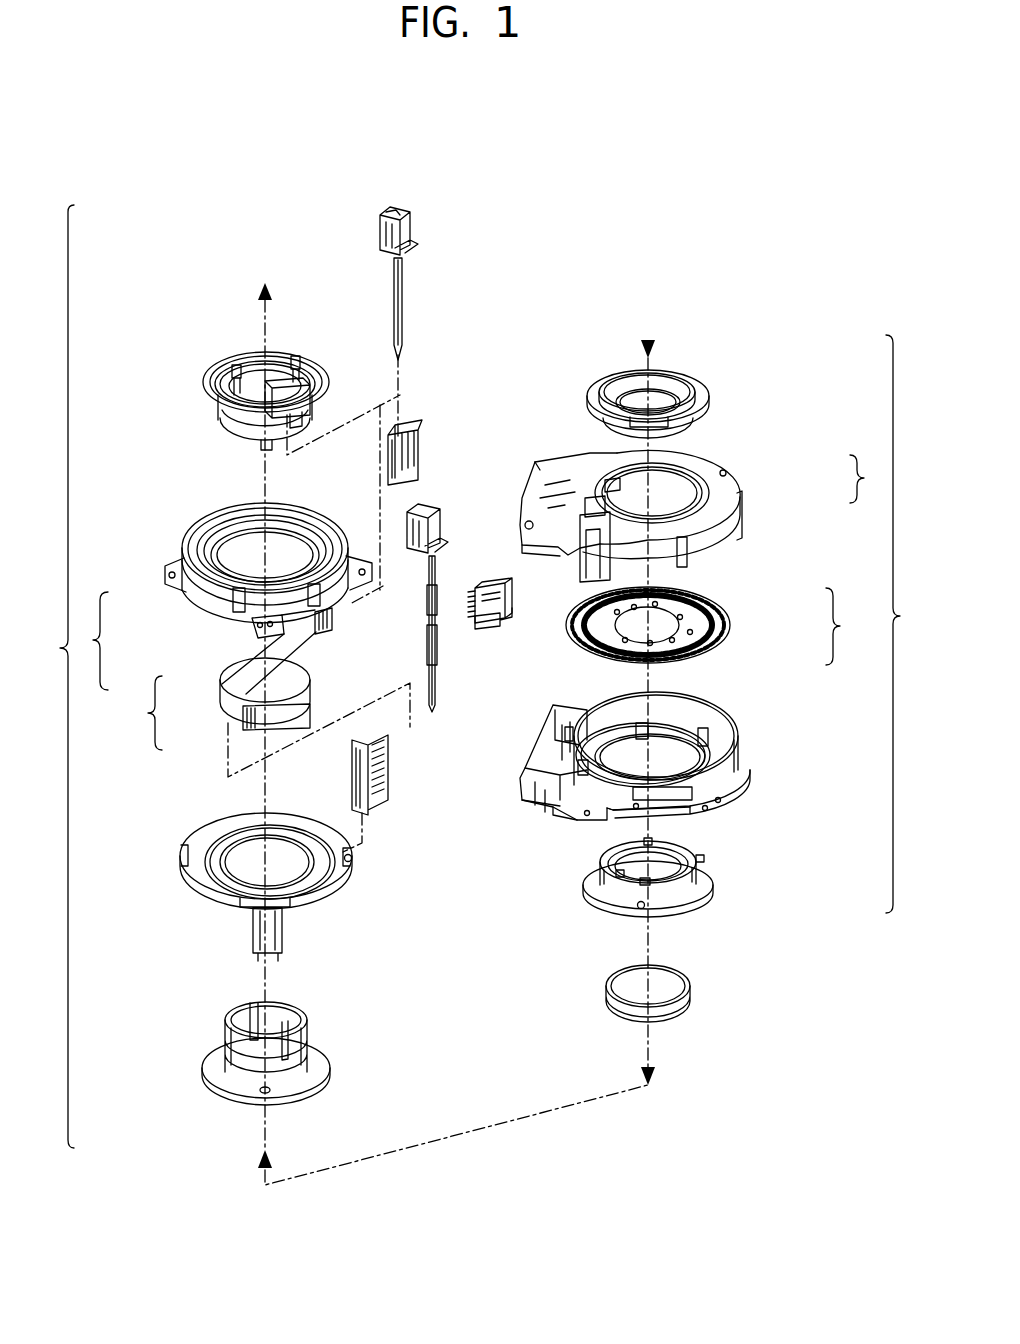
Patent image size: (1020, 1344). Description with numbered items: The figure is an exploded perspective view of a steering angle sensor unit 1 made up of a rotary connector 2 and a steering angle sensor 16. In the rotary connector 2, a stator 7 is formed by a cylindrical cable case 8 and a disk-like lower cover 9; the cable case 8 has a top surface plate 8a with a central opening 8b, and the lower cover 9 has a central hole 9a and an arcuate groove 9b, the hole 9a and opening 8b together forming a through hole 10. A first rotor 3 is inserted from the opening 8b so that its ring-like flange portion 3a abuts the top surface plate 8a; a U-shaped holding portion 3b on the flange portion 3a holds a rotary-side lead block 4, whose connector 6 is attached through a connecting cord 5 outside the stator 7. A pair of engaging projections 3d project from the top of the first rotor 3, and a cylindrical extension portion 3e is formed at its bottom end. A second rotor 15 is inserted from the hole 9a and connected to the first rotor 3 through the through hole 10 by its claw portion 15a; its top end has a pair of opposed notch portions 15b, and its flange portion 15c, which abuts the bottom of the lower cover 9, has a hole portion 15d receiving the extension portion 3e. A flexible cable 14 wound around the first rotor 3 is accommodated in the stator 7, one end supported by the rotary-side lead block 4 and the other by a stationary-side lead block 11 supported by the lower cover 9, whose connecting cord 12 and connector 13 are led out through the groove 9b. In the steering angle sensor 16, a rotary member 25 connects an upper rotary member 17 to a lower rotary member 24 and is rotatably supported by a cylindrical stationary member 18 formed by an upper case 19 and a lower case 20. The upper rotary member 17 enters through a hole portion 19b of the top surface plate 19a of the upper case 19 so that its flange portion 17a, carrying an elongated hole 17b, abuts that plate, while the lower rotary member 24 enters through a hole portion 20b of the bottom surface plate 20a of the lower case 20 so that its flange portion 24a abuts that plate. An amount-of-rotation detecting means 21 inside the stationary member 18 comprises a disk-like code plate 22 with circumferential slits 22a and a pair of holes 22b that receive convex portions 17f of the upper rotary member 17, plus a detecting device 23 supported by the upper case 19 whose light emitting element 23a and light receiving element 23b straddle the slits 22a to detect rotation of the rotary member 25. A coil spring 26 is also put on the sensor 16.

The steering angle sensor unit 1 is at (611, 214).
The rotary connector 2 is at (57, 676).
The first rotor 3 is at (278, 378).
The flange portion 3a is at (326, 384).
The holding portion 3b is at (308, 396).
The engaging projections 3d is at (247, 375).
The extension portion 3e is at (260, 447).
The rotary-side lead block 4 is at (418, 468).
The connecting cord 5 is at (402, 306).
The connector 6 is at (410, 226).
The stator 7 is at (93, 641).
The cable case 8 is at (242, 587).
The top surface plate 8a is at (312, 528).
The opening 8b is at (205, 580).
The lower cover 9 is at (258, 811).
The hole 9a is at (240, 858).
The groove 9b is at (353, 861).
The through hole 10 is at (140, 713).
The stationary-side lead block 11 is at (386, 780).
The connecting cord 12 is at (429, 645).
The connector 13 is at (438, 522).
The flexible cable 14 is at (308, 668).
The second rotor 15 is at (279, 1035).
The claw portion 15a is at (232, 1050).
The notch portions 15b is at (252, 1034).
The flange portion 15c is at (328, 1050).
The hole portion 15d is at (259, 1091).
The steering angle sensor 16 is at (907, 624).
The upper rotary member 17 is at (702, 728).
The flange portion 17a is at (592, 882).
The elongated hole 17b is at (636, 907).
The convex portions 17f is at (656, 841).
The stationary member 18 is at (846, 626).
The upper case 19 is at (649, 738).
The top surface plate 19a is at (742, 787).
The hole portion 19b is at (625, 758).
The lower case 20 is at (675, 523).
The bottom surface plate 20a is at (557, 472).
The hole portion 20b is at (674, 485).
The amount-of-rotation detecting means 21 is at (747, 718).
The code plate 22 is at (673, 616).
The slits 22a is at (688, 606).
The holes 22b is at (640, 640).
The detecting device 23 is at (614, 623).
The light emitting element 23a is at (500, 640).
The light receiving element 23b is at (493, 590).
The lower rotary member 24 is at (713, 414).
The flange portion 24a is at (704, 395).
The rotary member 25 is at (871, 479).
The coil spring 26 is at (690, 986).